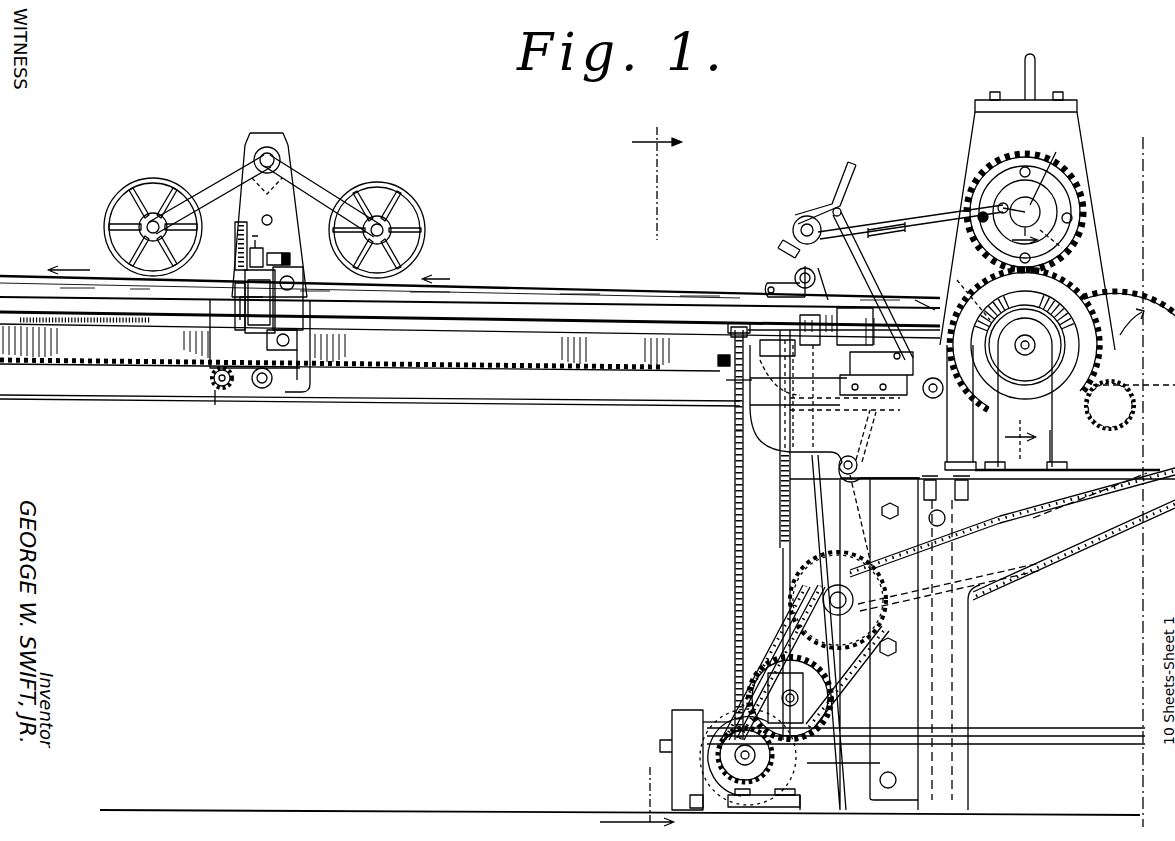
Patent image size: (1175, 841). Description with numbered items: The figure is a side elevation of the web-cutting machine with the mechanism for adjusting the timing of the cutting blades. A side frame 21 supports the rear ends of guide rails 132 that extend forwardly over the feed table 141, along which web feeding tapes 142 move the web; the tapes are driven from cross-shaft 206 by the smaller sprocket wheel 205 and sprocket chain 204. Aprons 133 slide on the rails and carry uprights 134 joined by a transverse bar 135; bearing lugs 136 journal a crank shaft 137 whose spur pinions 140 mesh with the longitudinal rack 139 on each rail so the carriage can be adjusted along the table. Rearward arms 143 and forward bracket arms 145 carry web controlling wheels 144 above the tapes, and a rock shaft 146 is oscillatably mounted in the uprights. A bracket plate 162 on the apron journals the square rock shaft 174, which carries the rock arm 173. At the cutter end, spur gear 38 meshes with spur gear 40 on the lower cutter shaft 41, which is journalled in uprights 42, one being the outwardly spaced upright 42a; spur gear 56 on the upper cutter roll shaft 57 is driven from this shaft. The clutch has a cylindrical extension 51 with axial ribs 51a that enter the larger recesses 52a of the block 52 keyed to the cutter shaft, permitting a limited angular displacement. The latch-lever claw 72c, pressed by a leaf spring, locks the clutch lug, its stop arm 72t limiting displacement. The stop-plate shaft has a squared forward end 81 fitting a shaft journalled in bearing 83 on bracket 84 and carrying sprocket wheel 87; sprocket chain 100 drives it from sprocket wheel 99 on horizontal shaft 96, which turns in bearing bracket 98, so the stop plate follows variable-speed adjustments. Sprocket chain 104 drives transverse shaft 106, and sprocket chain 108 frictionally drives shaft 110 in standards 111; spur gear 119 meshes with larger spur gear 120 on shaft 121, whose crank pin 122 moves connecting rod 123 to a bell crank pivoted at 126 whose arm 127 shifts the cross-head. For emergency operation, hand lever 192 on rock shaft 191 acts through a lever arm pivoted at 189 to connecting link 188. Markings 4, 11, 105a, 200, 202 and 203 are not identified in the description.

The section line 4- 4 is at (657, 172).
The direction arrow 11 is at (1020, 338).
The side frame 21 is at (1140, 490).
The spur gear 38 is at (1124, 482).
The spur gear 40 is at (1104, 405).
The lower cutter shaft 41 is at (970, 290).
The upright 42 is at (972, 136).
The upright 42a is at (1055, 422).
The cylindrical extension 51 is at (1084, 264).
The axial rib 51a is at (1025, 345).
The cylindrical block 52 is at (1092, 292).
The peripheral recess 52a is at (1067, 394).
The spur gear 56 is at (1075, 176).
The upper cutter roll shaft 57 is at (1056, 152).
The claw 72c is at (919, 302).
The stop arm 72t is at (956, 577).
The forward end 81 is at (716, 361).
The bearing 83 is at (740, 383).
The bracket 84 is at (748, 436).
The sprocket wheel 87 is at (732, 333).
The horizontal shaft 96 is at (1066, 730).
The bearing bracket 98 is at (678, 712).
The sprocket wheel 99 is at (734, 722).
The sprocket chain 100 is at (734, 540).
The sprocket chain 104 is at (1058, 560).
The chain 105a is at (950, 587).
The transverse shaft 106 is at (822, 591).
The sprocket chain 108 is at (760, 636).
The transverse shaft 110 is at (684, 760).
The standard 111 is at (808, 770).
The spur gear 119 is at (780, 790).
The spur gear 120 is at (812, 745).
The transverse shaft 121 is at (752, 666).
The crank pin 122 is at (819, 682).
The connecting rod 123 is at (806, 536).
The pivot 126 is at (824, 470).
The arm 127 is at (870, 465).
The guide rail 132 is at (470, 338).
The apron 133 is at (318, 343).
The upright 134 is at (269, 221).
The transverse bar 135 is at (284, 152).
The bearing lug 136 is at (258, 392).
The transverse shaft 137 is at (227, 392).
The longitudinal rack 139 is at (438, 367).
The spur pinion 140 is at (208, 388).
The feed table 141 is at (511, 292).
The web feeding tape 142 is at (556, 291).
The arm 143 is at (320, 187).
The web controlling wheel 144 is at (120, 204).
The bracket arm 145 is at (220, 178).
The rock shaft 146 is at (273, 222).
The bracket plate 162 is at (300, 382).
The rock arm 173 is at (256, 291).
The rock shaft 174 is at (520, 333).
The connecting link 188 is at (874, 274).
The pivot 189 is at (846, 210).
The rock shaft 191 is at (794, 228).
The hand lever 192 is at (840, 178).
The pivot bracket 200 is at (785, 272).
The link rod 202 is at (922, 228).
The crank pin link 203 is at (985, 193).
The sprocket chain 204 is at (777, 470).
The sprocket wheel 205 is at (845, 395).
The cross-shaft 206 is at (830, 286).